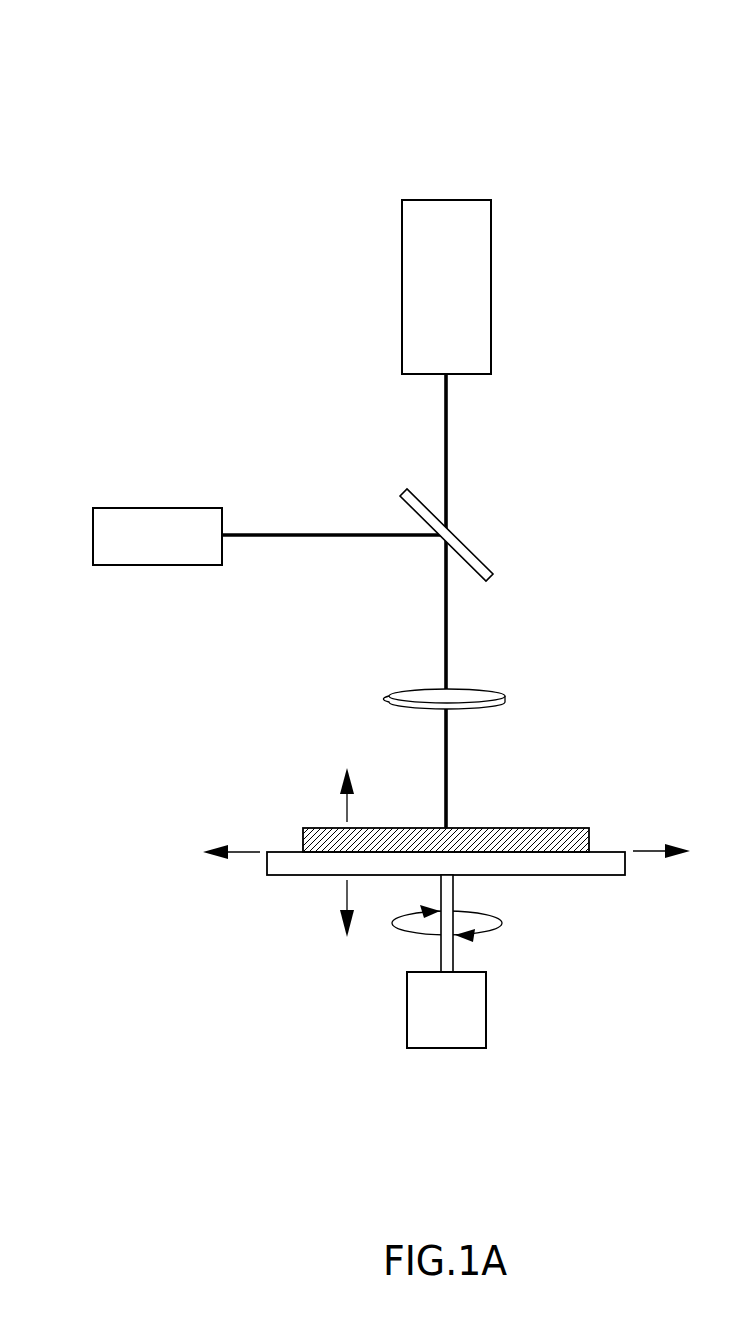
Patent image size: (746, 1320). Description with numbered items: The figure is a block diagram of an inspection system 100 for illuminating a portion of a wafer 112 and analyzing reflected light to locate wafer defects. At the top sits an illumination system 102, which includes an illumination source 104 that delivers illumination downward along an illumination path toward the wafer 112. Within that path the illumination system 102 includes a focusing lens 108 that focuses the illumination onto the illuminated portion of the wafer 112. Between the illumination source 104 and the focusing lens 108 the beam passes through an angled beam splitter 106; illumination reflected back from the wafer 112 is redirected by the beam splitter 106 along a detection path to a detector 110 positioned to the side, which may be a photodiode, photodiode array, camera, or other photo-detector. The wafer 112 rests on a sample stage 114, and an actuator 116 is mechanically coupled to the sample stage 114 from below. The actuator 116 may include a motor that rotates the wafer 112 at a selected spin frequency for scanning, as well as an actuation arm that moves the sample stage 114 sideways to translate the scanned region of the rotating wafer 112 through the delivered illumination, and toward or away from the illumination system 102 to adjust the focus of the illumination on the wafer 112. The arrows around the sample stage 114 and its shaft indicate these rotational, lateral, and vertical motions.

The inspection system 100 is at (156, 74).
The illumination system 102 is at (564, 200).
The illumination source 104 is at (402, 287).
The beam splitter 106 is at (473, 553).
The focusing lens 108 is at (480, 689).
The detector 110 is at (157, 507).
The wafer 112 is at (582, 827).
The sample stage 114 is at (613, 876).
The actuator 116 is at (486, 1007).